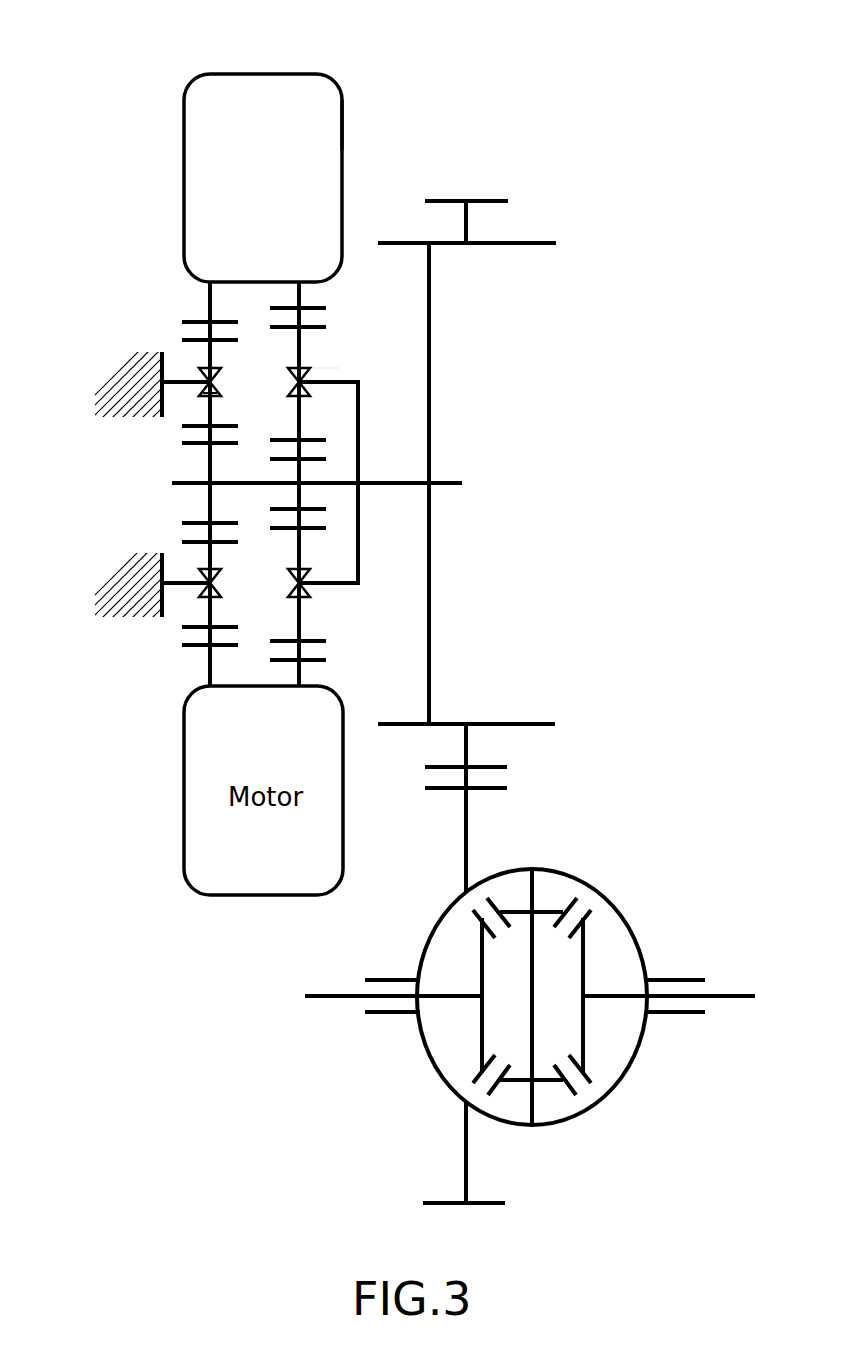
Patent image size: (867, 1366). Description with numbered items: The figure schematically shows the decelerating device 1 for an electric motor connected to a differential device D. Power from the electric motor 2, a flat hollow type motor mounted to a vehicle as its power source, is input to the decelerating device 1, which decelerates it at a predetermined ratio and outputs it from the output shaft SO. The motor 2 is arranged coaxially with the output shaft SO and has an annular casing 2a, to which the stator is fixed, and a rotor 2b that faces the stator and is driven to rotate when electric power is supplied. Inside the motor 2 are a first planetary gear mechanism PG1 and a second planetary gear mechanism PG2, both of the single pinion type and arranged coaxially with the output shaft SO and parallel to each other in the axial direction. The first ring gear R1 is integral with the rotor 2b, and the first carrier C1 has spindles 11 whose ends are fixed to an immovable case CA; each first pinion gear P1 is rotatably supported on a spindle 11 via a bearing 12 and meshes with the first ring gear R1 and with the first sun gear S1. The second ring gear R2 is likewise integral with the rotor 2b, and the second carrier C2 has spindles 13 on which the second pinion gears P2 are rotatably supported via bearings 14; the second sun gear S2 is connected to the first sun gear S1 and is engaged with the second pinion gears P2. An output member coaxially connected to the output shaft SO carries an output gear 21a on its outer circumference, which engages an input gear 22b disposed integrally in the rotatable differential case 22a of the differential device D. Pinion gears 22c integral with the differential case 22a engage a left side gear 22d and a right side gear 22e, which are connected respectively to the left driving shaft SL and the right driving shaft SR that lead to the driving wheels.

The decelerating device 1 is at (438, 78).
The electric motor 2 is at (333, 75).
The casing 2a is at (343, 122).
The rotor 2b is at (210, 298).
The first ring gear R1 is at (190, 320).
The first pinion gears P1 is at (185, 338).
The second ring gear R2 is at (305, 307).
The second pinion gears P2 is at (318, 325).
The first carrier C1 is at (190, 378).
The spindles 11 is at (204, 385).
The bearing 12 is at (205, 393).
The second carrier C2 is at (430, 362).
The spindles 13 is at (295, 378).
The bearing 14 is at (305, 392).
The first sun gear S1 is at (195, 447).
The second sun gear S2 is at (318, 459).
The output shaft SO is at (447, 486).
The immovable case CA is at (103, 587).
The first planetary gear mechanism PG1 is at (190, 660).
The second planetary gear mechanism PG2 is at (330, 668).
The output gear 21a is at (495, 764).
The input gear 22b is at (500, 790).
The differential case 22a is at (578, 876).
The pinion gears 22c is at (502, 910).
The left side gear 22d is at (480, 925).
The right side gear 22e is at (590, 925).
The differential device D is at (539, 970).
The left driving shaft SL is at (315, 998).
The right driving shaft SR is at (740, 998).